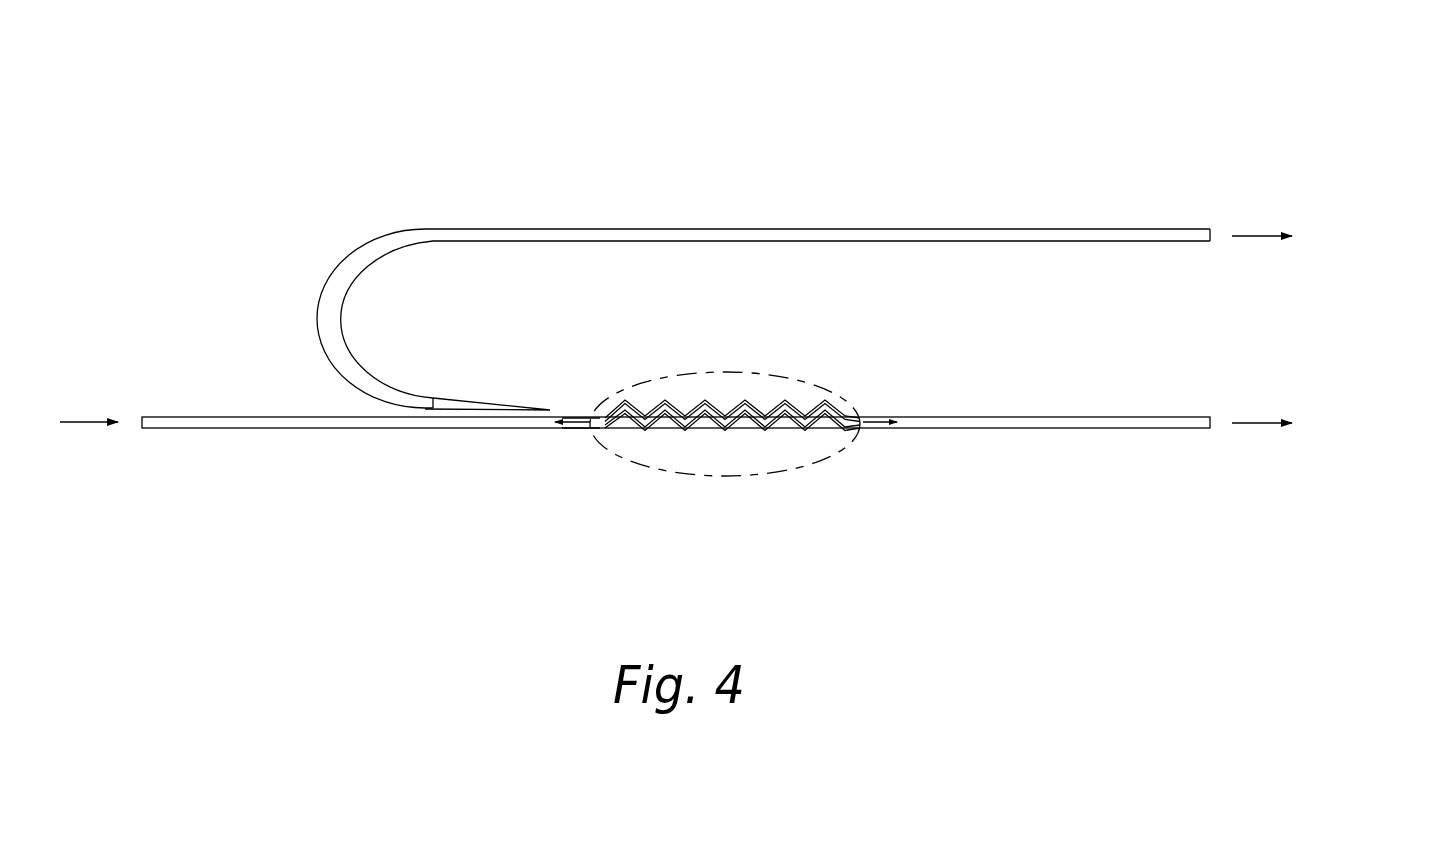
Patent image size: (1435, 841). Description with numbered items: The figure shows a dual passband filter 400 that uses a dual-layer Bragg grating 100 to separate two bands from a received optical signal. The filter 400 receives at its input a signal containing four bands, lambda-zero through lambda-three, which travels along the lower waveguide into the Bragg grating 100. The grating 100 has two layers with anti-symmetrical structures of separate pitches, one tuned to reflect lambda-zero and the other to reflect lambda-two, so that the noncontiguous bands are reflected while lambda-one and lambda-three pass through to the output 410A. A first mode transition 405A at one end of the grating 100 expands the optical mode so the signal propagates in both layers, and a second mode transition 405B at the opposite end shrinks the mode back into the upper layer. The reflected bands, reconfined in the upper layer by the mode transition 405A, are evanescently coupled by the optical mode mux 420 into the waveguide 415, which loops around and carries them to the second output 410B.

The dual passband filter 400 is at (922, 53).
The waveguide 415 is at (772, 229).
The optical mode mux 420 is at (478, 400).
The dual-layer Bragg grating 100 is at (745, 372).
The first mode transition 405A is at (577, 430).
The second mode transition 405B is at (870, 430).
The output 410A is at (1256, 417).
The second output 410B is at (1256, 230).